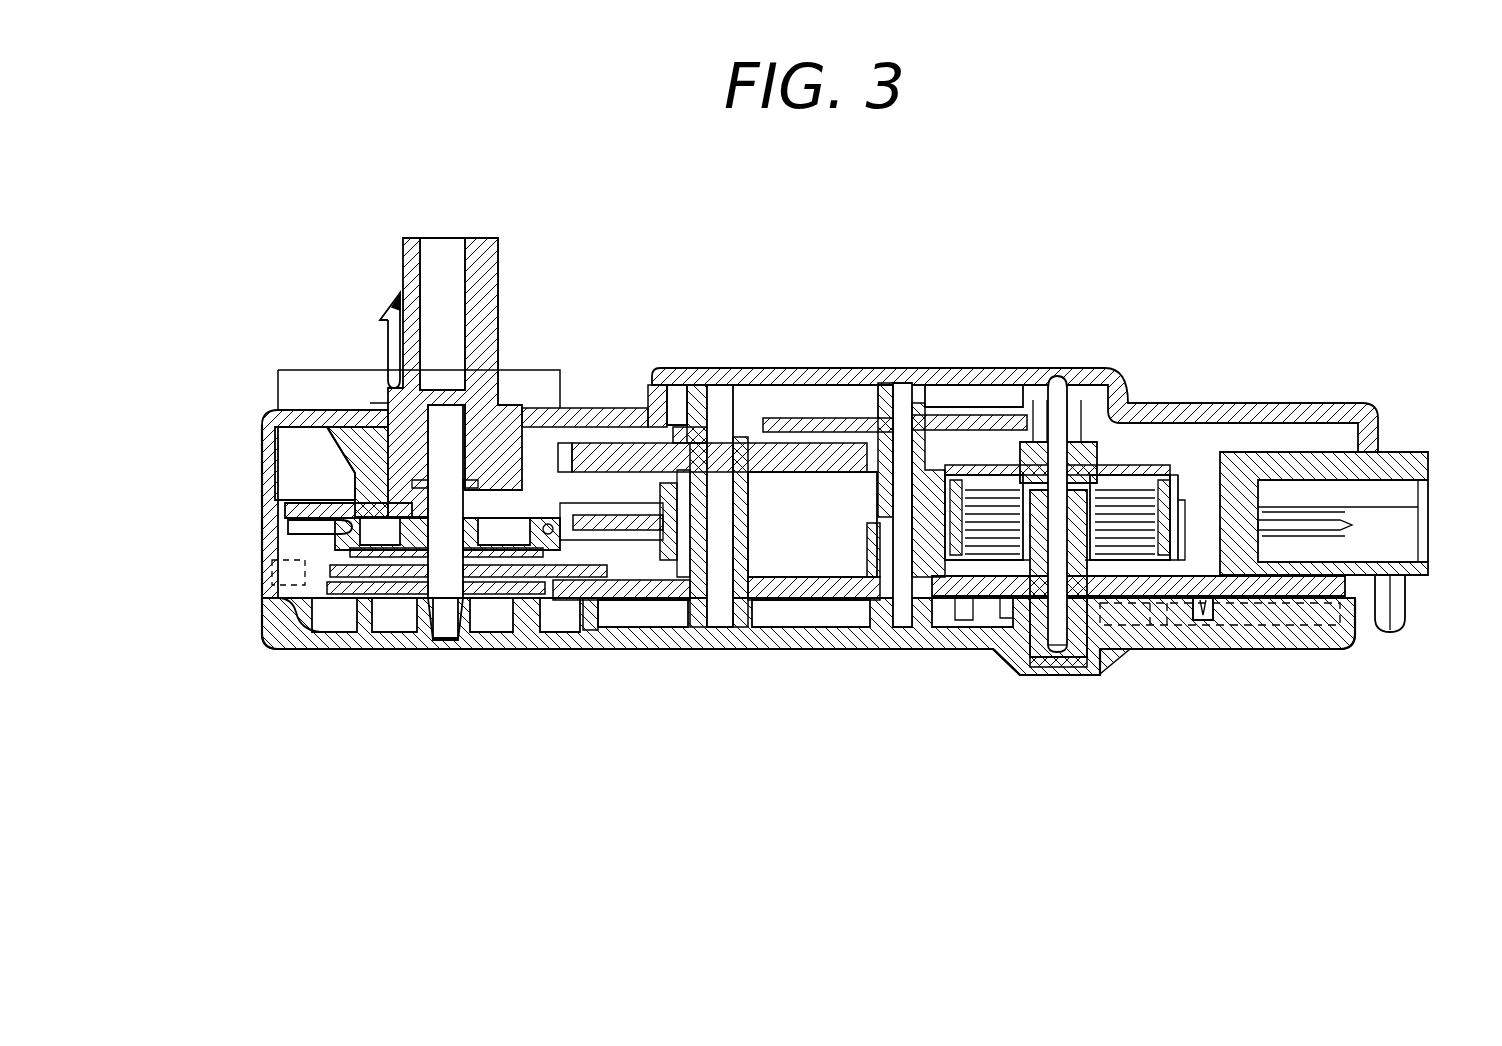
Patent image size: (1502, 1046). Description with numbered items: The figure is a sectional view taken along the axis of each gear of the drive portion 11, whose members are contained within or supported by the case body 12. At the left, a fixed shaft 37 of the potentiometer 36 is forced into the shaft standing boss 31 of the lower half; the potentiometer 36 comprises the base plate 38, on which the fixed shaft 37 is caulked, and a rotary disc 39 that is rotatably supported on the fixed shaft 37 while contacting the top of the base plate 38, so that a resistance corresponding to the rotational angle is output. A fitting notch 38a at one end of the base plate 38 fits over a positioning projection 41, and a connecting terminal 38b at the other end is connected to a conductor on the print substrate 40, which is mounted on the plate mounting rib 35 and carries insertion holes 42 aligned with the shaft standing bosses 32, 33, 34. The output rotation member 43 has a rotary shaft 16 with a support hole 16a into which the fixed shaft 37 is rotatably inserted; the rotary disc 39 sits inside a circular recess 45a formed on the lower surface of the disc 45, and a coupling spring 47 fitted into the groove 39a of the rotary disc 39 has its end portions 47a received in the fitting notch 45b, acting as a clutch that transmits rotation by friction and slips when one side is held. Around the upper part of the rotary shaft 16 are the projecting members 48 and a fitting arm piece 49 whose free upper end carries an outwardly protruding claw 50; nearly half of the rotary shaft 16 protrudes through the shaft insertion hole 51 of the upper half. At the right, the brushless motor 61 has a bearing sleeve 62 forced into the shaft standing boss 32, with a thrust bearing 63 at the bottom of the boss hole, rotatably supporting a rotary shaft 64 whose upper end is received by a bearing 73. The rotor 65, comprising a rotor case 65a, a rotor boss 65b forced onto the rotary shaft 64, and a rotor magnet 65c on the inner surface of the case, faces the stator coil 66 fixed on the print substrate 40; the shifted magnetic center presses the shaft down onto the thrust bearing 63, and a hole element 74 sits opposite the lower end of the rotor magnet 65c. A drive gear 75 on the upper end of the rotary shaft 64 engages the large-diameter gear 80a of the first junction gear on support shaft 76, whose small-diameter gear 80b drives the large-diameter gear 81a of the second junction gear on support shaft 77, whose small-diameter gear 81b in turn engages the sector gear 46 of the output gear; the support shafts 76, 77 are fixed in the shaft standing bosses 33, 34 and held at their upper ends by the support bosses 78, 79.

The drive portion 11 is at (1086, 216).
The case body 12 is at (1300, 405).
The rotary shaft 16 is at (443, 412).
The support hole 16a is at (382, 422).
The shaft standing boss 31 is at (410, 625).
The shaft standing boss 32 is at (972, 600).
The shaft standing boss 33 is at (888, 600).
The shaft standing boss 34 is at (714, 600).
The plate mounting rib 35 is at (618, 612).
The potentiometer 36 is at (566, 600).
The fixed shaft 37 is at (462, 388).
The base plate 38 is at (505, 627).
The fitting notch 38a is at (282, 620).
The connecting terminal 38b is at (652, 600).
The rotary disc 39 is at (282, 448).
The groove 39a is at (560, 450).
The print substrate 40 is at (792, 605).
The positioning projection 41 is at (290, 575).
The insertion hole 42 is at (920, 590).
The output rotation member 43 is at (640, 418).
The disc 45 is at (330, 512).
The circular recess 45a is at (448, 622).
The fitting notch 45b is at (330, 553).
The sector gear 46 is at (692, 430).
The coupling spring 47 is at (345, 600).
The end portions 47a is at (292, 532).
The projecting members 48 is at (500, 300).
The fitting arm piece 49 is at (385, 321).
The claw 50 is at (392, 292).
The shaft insertion hole 51 is at (492, 365).
The brushless motor 61 is at (1158, 462).
The bearing sleeve 62 is at (1122, 652).
The thrust bearing 63 is at (1062, 668).
The rotary shaft 64 is at (1052, 667).
The rotor 65 is at (962, 462).
The rotor case 65a is at (1000, 472).
The rotor boss 65b is at (1165, 470).
The rotor magnet 65c is at (946, 562).
The stator coil 66 is at (1182, 472).
The bearing 73 is at (1022, 445).
The hole element 74 is at (1262, 482).
The drive gear 75 is at (1062, 380).
The support shaft 76 is at (822, 600).
The support shaft 77 is at (722, 512).
The support boss 78 is at (876, 432).
The support boss 79 is at (762, 450).
The large-diameter gear 80a is at (836, 432).
The small-diameter gear 80b is at (874, 474).
The large-diameter gear 81a is at (806, 425).
The small-diameter gear 81b is at (757, 605).